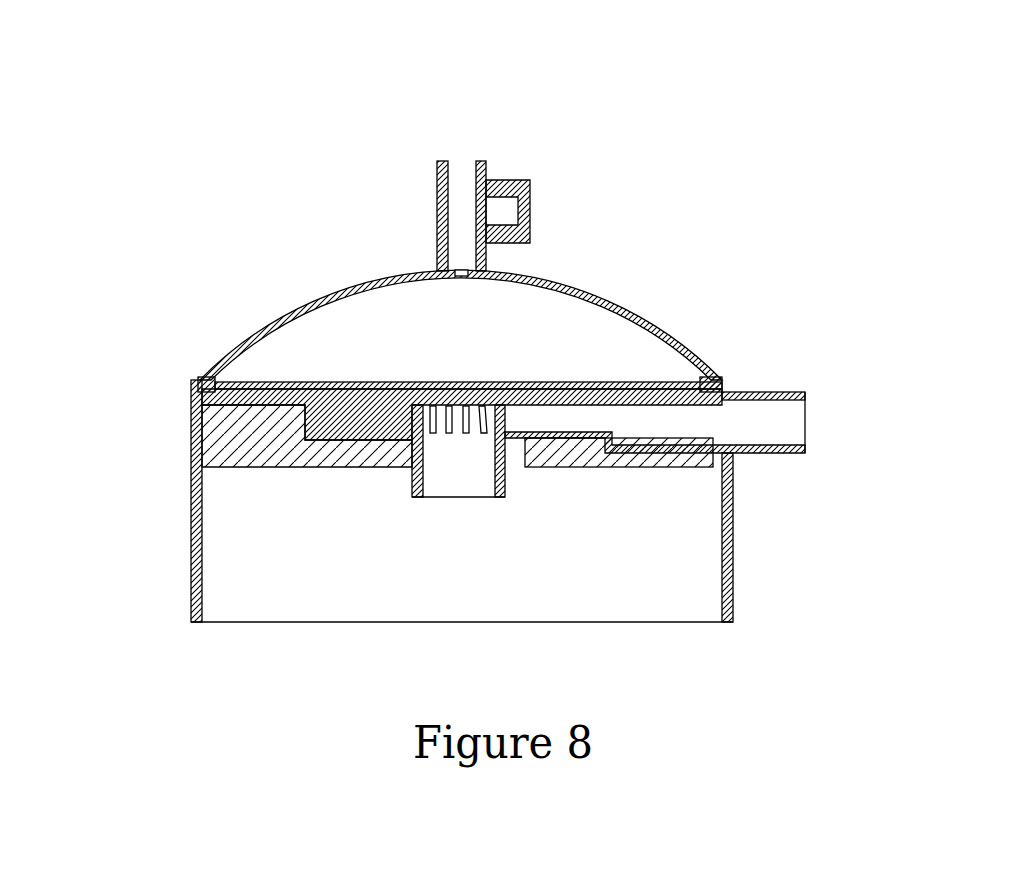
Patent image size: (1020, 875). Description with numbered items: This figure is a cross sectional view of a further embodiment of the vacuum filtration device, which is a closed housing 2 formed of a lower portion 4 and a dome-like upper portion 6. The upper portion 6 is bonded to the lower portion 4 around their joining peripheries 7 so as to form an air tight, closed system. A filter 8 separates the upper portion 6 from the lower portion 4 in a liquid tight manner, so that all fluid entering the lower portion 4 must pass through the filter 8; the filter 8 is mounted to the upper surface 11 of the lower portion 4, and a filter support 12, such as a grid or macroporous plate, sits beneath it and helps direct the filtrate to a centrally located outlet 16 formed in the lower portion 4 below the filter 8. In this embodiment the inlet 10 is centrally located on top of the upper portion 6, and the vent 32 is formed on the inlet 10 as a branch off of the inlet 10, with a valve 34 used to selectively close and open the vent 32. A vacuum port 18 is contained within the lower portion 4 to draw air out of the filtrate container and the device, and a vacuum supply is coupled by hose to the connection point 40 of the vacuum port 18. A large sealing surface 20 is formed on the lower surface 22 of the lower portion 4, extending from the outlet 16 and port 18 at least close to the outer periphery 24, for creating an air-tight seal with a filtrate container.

The closed housing 2 is at (183, 380).
The lower portion 4 is at (142, 560).
The upper portion 6 is at (613, 300).
The joining peripheries 7 is at (210, 370).
The filter 8 is at (578, 380).
The inlet 10 is at (459, 178).
The upper surface 11 is at (678, 407).
The filter support 12 is at (477, 440).
The outlet 16 is at (455, 470).
The vacuum port 18 is at (522, 430).
The sealing surface 20 is at (254, 467).
The lower surface 22 is at (693, 463).
The outer periphery 24 is at (717, 623).
The vent 32 is at (493, 207).
The valve 34 is at (532, 212).
The connection point 40 is at (778, 457).